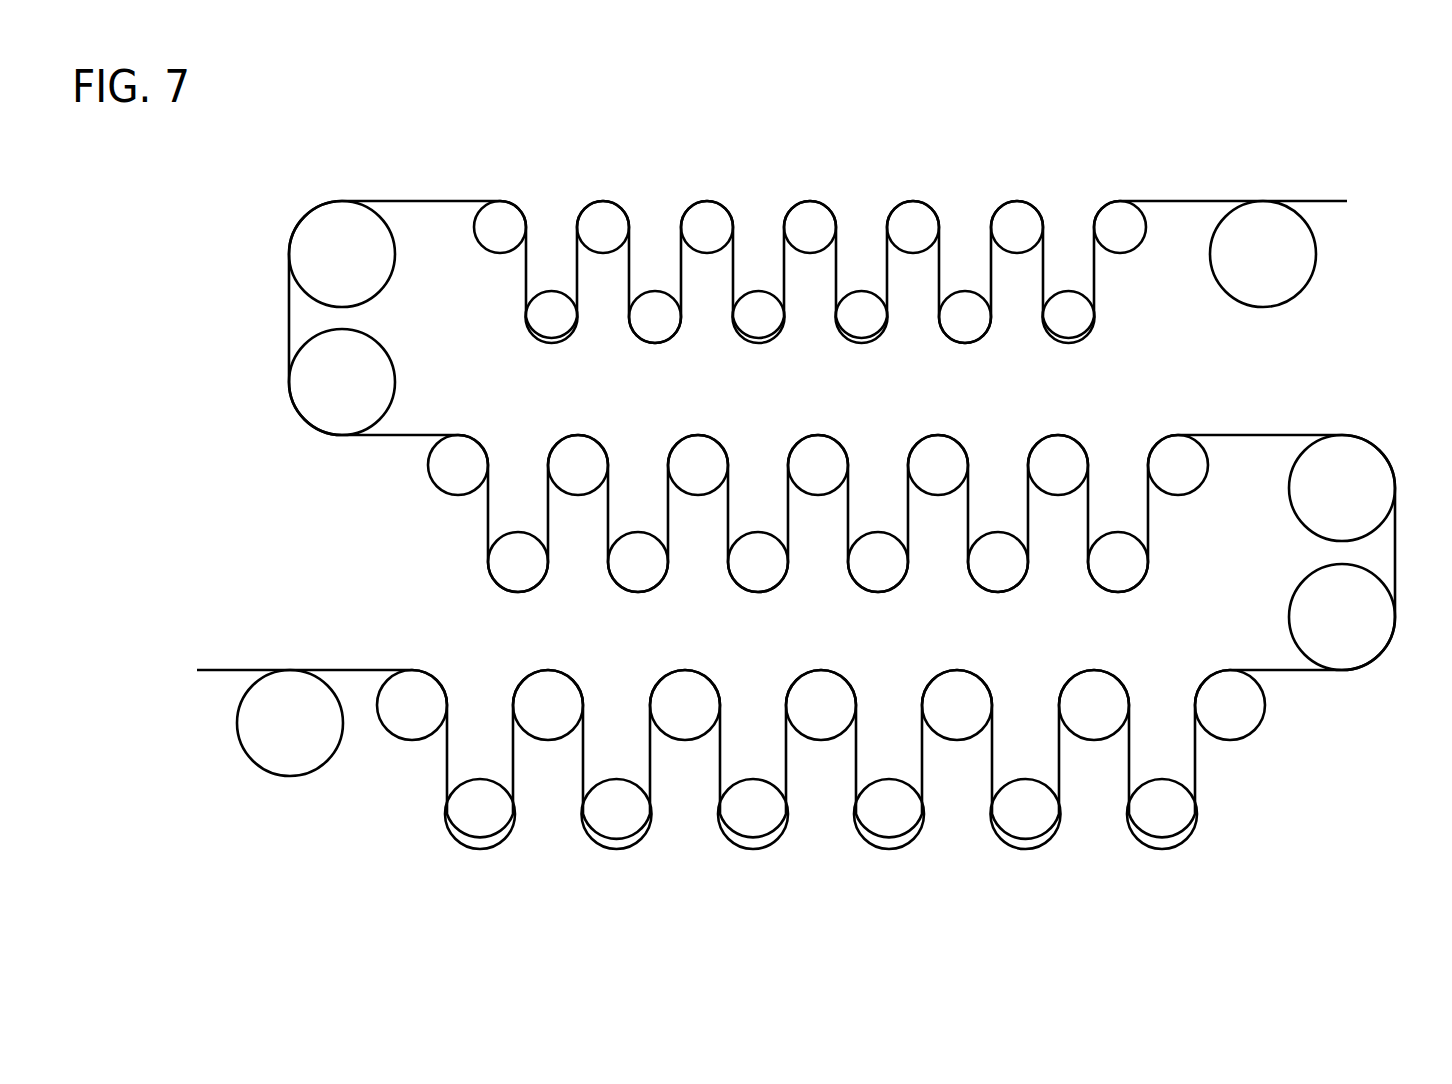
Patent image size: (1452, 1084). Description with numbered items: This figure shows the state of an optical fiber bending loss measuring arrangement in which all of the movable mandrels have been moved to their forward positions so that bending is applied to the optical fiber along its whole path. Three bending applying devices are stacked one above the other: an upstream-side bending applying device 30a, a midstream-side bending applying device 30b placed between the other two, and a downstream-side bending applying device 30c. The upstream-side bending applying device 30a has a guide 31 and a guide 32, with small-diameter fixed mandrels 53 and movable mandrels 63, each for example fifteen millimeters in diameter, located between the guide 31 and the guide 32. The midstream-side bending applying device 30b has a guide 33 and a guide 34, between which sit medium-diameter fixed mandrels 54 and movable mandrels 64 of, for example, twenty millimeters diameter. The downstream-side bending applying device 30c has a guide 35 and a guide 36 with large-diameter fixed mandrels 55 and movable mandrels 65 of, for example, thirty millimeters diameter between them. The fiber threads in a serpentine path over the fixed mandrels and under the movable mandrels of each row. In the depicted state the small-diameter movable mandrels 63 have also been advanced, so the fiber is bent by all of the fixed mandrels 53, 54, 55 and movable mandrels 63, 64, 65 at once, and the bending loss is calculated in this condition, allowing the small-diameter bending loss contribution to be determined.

The upstream-side bending applying device 30a is at (434, 150).
The midstream-side bending applying device 30b is at (447, 533).
The downstream-side bending applying device 30c is at (1240, 818).
The guide 31 is at (1288, 257).
The guide 32 is at (332, 233).
The guide 33 is at (335, 402).
The guide 34 is at (1353, 468).
The guide 35 is at (1352, 638).
The guide 36 is at (290, 753).
The fixed mandrels 53 is at (813, 227).
The fixed mandrels 54 is at (938, 458).
The fixed mandrels 55 is at (953, 692).
The movable mandrels 63 is at (1062, 322).
The movable mandrels 64 is at (1110, 567).
The movable mandrels 65 is at (1155, 825).